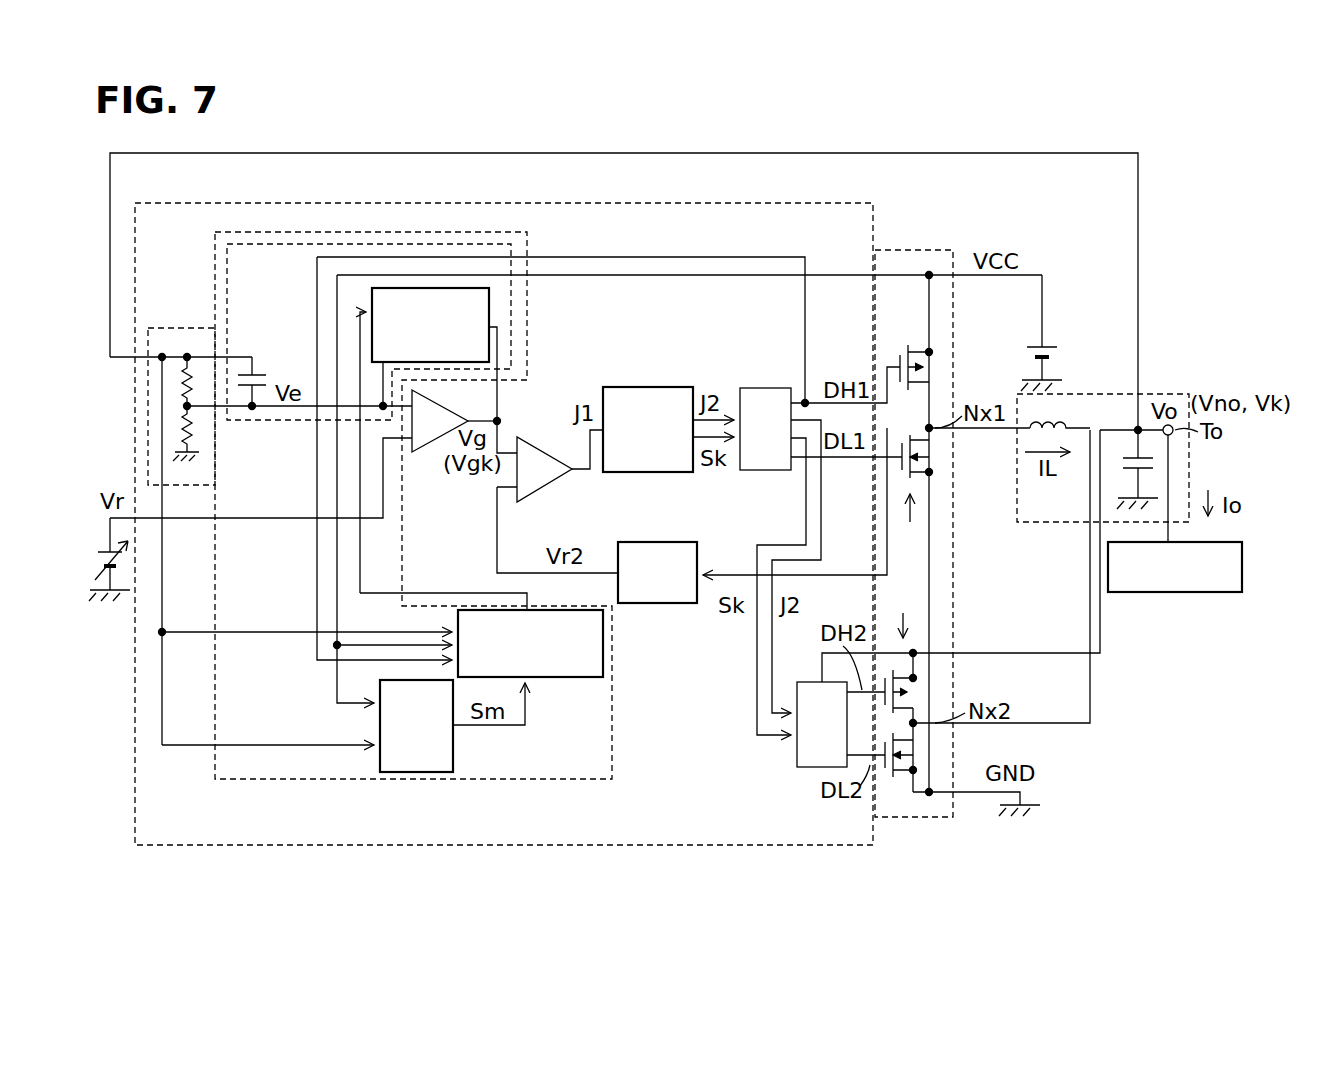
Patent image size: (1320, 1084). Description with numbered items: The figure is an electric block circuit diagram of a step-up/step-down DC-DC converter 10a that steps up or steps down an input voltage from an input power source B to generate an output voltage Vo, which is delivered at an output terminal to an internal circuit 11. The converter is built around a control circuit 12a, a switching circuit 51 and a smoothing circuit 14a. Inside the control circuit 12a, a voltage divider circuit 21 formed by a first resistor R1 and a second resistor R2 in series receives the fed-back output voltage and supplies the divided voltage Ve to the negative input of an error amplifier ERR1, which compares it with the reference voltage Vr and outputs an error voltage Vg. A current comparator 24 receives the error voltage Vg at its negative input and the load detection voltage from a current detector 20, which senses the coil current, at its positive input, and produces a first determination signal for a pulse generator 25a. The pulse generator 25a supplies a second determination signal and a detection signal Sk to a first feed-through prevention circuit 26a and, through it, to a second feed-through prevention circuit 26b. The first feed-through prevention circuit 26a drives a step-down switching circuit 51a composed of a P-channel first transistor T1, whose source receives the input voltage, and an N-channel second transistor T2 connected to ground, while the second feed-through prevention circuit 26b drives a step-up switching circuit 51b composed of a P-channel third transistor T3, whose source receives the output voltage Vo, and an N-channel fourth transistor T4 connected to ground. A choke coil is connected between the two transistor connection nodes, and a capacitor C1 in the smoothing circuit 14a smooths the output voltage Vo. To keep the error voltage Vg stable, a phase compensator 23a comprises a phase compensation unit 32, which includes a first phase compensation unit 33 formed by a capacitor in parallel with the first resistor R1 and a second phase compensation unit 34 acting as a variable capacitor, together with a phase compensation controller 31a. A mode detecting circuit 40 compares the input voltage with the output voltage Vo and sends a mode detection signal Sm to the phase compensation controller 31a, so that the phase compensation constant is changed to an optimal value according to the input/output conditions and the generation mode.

The step-up/step-down DC-DC converter 10a is at (759, 120).
The control circuit 12a is at (572, 191).
The phase compensator 23a is at (530, 236).
The phase compensation unit 32 is at (512, 290).
The second phase compensation unit 34 is at (490, 327).
The voltage divider circuit 21 is at (175, 328).
The first phase compensation unit 33 is at (268, 364).
The current comparator 24 is at (548, 448).
The pulse generator 25a is at (652, 387).
The first feed-through prevention circuit 26a is at (765, 388).
The second feed-through prevention circuit 26b is at (808, 774).
The current detector 20 is at (657, 542).
The switching circuit 51 is at (908, 250).
The step-down switching circuit 51a is at (910, 522).
The step-up switching circuit 51b is at (904, 612).
The phase compensation controller 31a is at (552, 677).
The mode detecting circuit 40 is at (453, 745).
The smoothing circuit 14a is at (1100, 394).
The internal circuit 11 is at (1168, 592).
The first resistor R1 is at (180, 372).
The second resistor R2 is at (195, 443).
The capacitor C1 is at (1150, 465).
The input power source B is at (1050, 346).
The first transistor T1 is at (920, 375).
The second transistor T2 is at (920, 455).
The third transistor T3 is at (925, 697).
The fourth transistor T4 is at (925, 752).
The error amplifier ERR1 is at (428, 455).